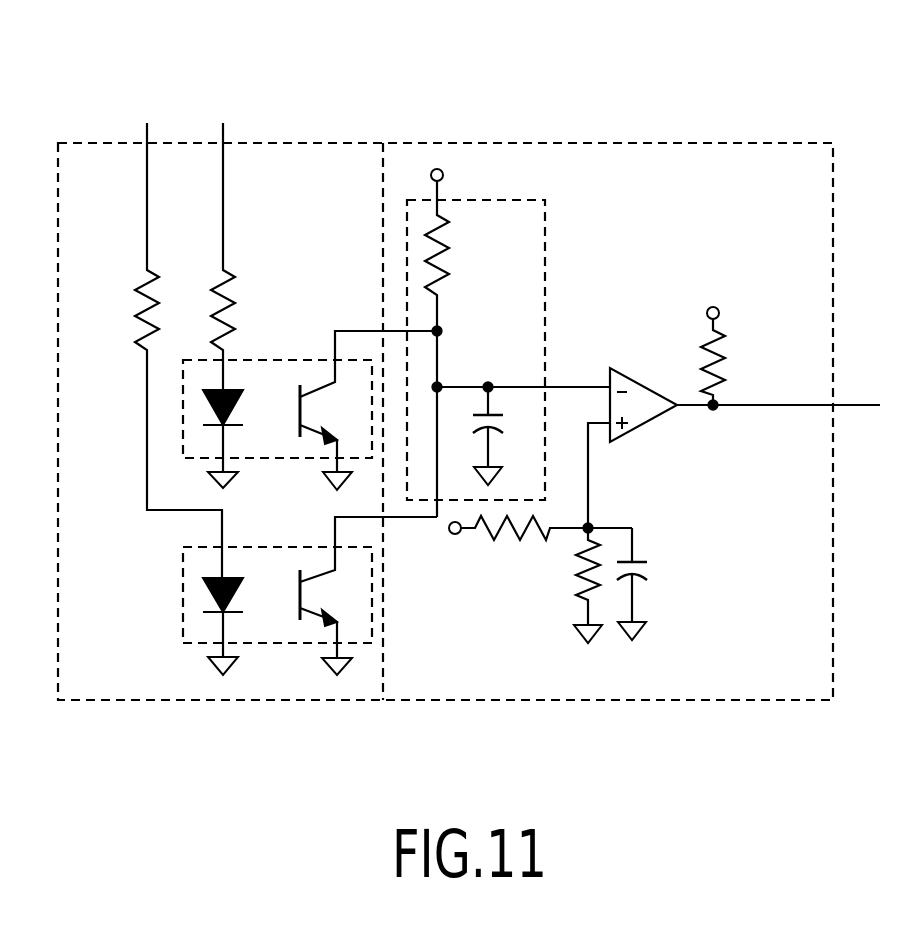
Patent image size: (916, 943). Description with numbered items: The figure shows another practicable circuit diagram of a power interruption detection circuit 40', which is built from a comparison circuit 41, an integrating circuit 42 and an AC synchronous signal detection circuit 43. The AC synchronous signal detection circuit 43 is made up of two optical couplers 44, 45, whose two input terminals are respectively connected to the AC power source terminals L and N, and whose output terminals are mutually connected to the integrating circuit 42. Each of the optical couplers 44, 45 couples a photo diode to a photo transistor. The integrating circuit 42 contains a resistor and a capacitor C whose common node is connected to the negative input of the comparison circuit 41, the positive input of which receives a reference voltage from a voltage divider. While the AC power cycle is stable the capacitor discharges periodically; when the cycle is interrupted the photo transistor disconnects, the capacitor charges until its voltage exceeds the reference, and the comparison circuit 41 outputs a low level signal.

The power interruption detection circuit 40' is at (445, 359).
The comparison circuit 41 is at (745, 215).
The integrating circuit 42 is at (500, 240).
The AC synchronous signal detection circuit 43 is at (302, 173).
The optical coupler 44 is at (272, 385).
The optical coupler 45 is at (275, 590).